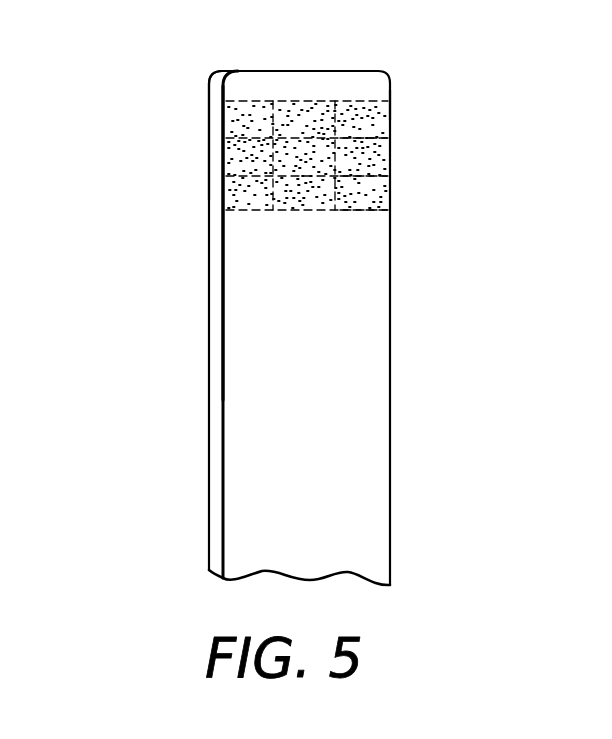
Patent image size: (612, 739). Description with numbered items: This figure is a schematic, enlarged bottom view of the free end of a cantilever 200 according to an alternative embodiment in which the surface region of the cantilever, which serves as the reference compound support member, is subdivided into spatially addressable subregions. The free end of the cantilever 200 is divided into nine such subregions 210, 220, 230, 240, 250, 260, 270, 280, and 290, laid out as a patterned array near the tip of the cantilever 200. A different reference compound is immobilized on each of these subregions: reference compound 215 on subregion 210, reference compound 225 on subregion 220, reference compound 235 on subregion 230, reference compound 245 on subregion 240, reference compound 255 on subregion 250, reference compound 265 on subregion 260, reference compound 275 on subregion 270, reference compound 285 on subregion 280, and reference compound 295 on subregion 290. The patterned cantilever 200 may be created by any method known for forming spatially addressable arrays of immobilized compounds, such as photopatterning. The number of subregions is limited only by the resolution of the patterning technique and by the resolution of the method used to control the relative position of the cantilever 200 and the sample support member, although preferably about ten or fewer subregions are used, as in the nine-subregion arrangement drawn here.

The cantilever 200 is at (385, 72).
The subregion 210 is at (233, 129).
The reference compound 215 is at (232, 137).
The subregion 220 is at (247, 155).
The reference compound 225 is at (250, 165).
The subregion 230 is at (250, 180).
The reference compound 235 is at (258, 200).
The subregion 240 is at (285, 127).
The reference compound 245 is at (217, 78).
The subregion 250 is at (308, 140).
The reference compound 255 is at (322, 152).
The subregion 260 is at (282, 210).
The reference compound 265 is at (313, 208).
The subregion 270 is at (388, 105).
The reference compound 275 is at (377, 130).
The subregion 280 is at (382, 158).
The reference compound 285 is at (382, 170).
The subregion 290 is at (383, 193).
The reference compound 295 is at (362, 197).